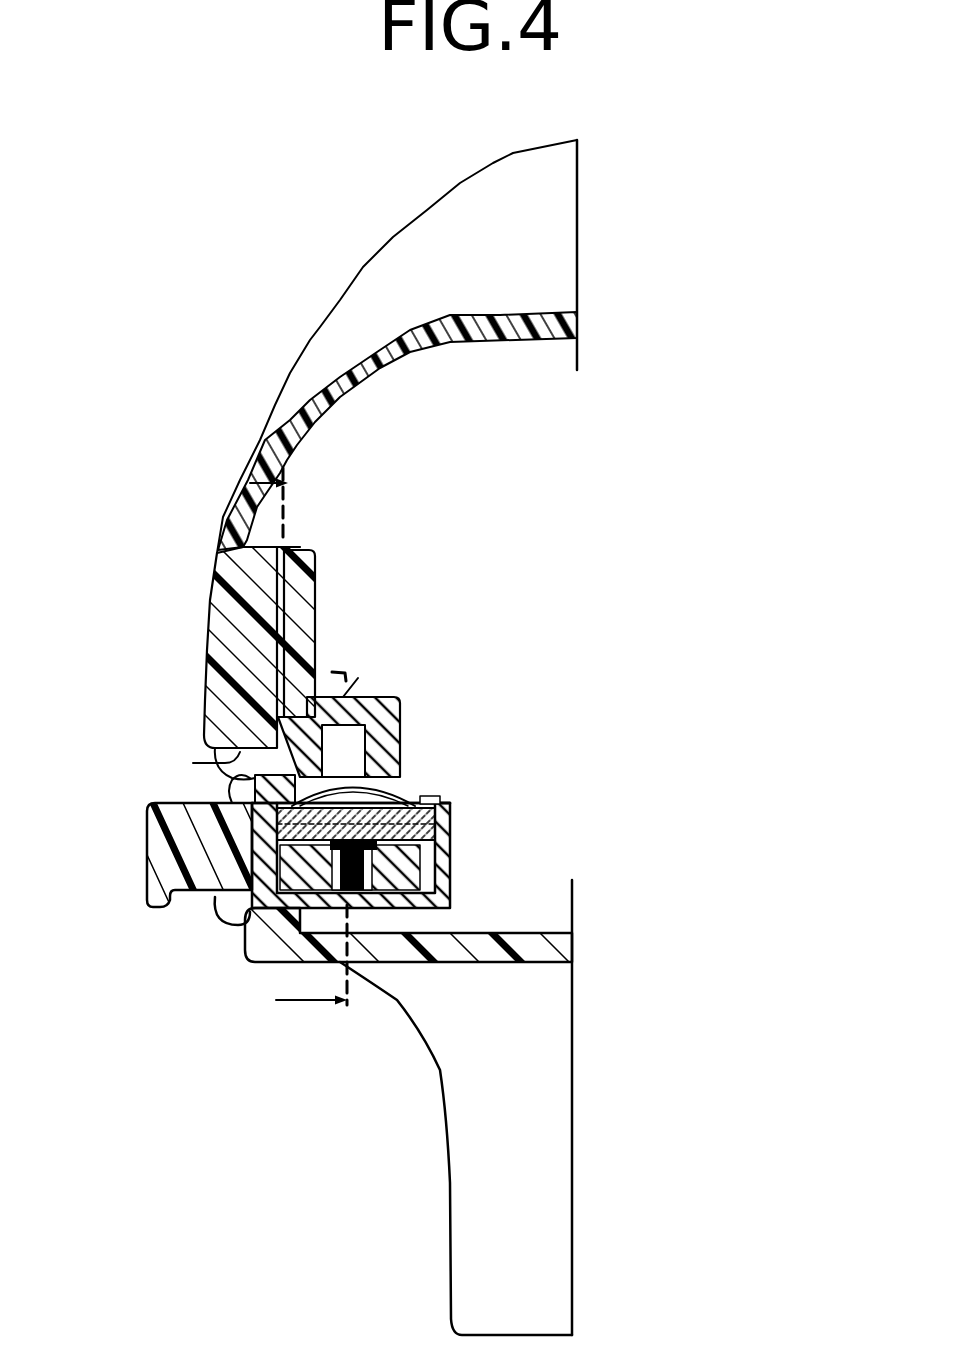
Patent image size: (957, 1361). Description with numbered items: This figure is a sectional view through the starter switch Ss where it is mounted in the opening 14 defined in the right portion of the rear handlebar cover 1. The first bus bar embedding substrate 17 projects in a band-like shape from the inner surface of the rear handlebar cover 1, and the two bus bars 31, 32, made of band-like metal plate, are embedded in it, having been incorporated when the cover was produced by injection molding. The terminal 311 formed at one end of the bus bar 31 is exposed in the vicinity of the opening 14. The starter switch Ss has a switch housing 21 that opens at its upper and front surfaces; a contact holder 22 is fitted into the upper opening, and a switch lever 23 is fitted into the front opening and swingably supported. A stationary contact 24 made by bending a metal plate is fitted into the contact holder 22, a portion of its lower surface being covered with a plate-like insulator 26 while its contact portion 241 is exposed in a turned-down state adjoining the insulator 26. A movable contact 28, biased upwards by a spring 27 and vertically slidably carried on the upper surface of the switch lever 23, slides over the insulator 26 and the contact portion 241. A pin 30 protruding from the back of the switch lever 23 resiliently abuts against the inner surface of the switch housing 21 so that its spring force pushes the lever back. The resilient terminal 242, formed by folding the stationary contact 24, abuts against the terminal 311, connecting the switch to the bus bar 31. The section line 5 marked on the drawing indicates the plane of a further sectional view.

The rear handlebar cover 1 is at (296, 328).
The section line V-V 5 is at (240, 483).
The opening 14 is at (222, 807).
The first bus bar embedding substrate 17 is at (300, 548).
The switch housing 21 is at (464, 864).
The contact holder 22 is at (435, 800).
The switch lever 23 is at (136, 863).
The stationary contact 24 is at (398, 793).
The contact portion 241 is at (413, 848).
The terminal 242 is at (397, 787).
The plate-like insulator 26 is at (215, 895).
The spring 27 is at (368, 905).
The movable contact 28 is at (248, 952).
The pin 30 is at (420, 905).
The bus bar 31 is at (390, 693).
The terminal 311 is at (310, 696).
The bus bar 32 is at (313, 593).
The starter switch Ss is at (135, 808).